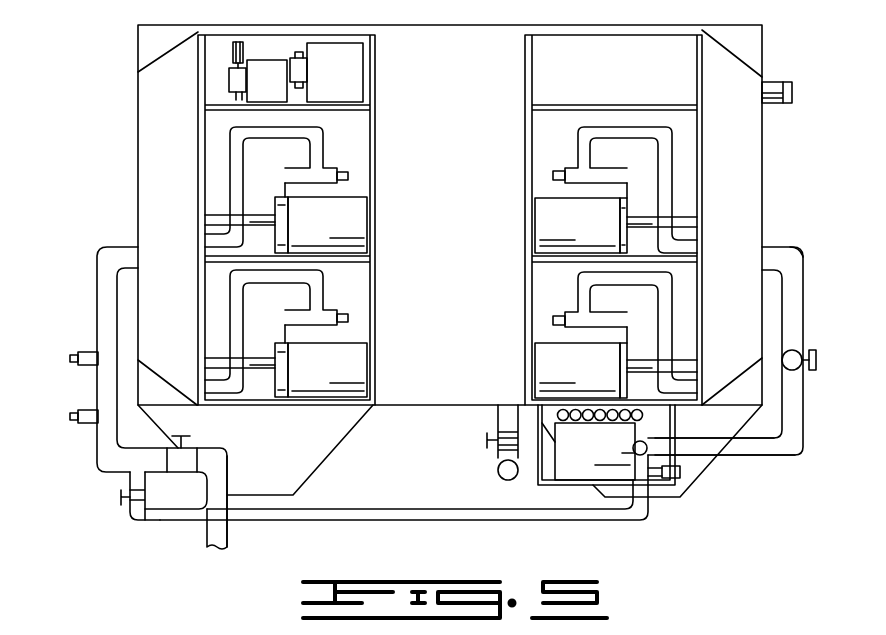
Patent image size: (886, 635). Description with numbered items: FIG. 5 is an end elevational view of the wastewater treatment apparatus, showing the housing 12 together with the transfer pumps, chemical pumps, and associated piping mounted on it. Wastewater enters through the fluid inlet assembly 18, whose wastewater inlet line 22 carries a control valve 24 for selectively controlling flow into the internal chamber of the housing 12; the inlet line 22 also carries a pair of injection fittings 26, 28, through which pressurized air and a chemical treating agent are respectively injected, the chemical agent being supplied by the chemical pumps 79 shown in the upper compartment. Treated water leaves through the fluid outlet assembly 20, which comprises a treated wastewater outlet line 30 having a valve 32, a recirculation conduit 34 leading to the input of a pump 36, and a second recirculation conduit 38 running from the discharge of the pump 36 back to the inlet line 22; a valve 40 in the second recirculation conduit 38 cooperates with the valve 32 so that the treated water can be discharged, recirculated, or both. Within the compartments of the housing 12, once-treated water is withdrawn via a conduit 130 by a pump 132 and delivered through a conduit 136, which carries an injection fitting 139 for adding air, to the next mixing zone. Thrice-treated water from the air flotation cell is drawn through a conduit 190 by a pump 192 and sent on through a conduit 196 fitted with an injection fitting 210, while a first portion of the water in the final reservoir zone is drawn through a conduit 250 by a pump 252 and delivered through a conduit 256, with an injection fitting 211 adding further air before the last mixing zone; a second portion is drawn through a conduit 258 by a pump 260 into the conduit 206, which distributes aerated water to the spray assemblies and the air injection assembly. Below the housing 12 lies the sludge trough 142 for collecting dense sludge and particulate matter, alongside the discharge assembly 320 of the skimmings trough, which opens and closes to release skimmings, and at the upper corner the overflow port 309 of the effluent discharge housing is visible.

The housing 12 is at (770, 167).
The fluid inlet assembly 18 is at (88, 475).
The fluid outlet assembly 20 is at (810, 318).
The wastewater inlet line 22 is at (207, 541).
The control valve 24 is at (182, 436).
The injection fitting 26 is at (70, 416).
The injection fitting 28 is at (70, 358).
The treated wastewater outlet line 30 is at (799, 252).
The valve 32 is at (818, 359).
The recirculation conduit 34 is at (806, 440).
The pump 36 is at (588, 467).
The second recirculation conduit 38 is at (470, 523).
The valve 40 is at (120, 498).
The chemical pumps 79 is at (280, 93).
The conduit 130 is at (222, 383).
The pump 132 is at (348, 372).
The conduit 136 is at (318, 278).
The injection fitting 139 is at (348, 319).
The sludge trough 142 is at (297, 479).
The conduit 190 is at (690, 221).
The pump 192 is at (596, 234).
The conduit 196 is at (665, 163).
The conduit 206 is at (316, 137).
The injection fitting 210 is at (553, 176).
The injection fitting 211 is at (553, 318).
The conduit 250 is at (678, 366).
The pump 252 is at (597, 374).
The conduit 256 is at (668, 300).
The conduit 258 is at (215, 223).
The pump 260 is at (346, 229).
The overflow port 309 is at (792, 87).
The discharge assembly 320 is at (486, 463).